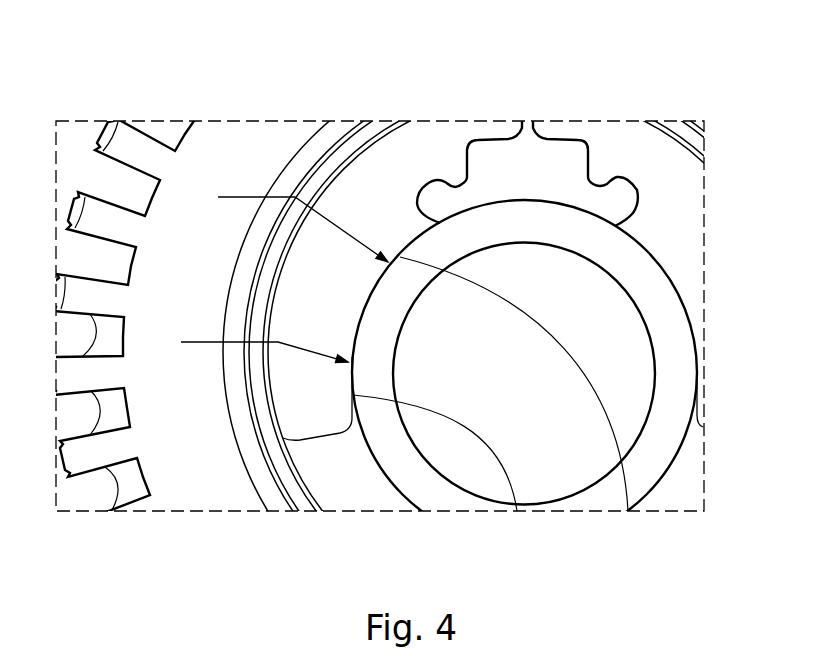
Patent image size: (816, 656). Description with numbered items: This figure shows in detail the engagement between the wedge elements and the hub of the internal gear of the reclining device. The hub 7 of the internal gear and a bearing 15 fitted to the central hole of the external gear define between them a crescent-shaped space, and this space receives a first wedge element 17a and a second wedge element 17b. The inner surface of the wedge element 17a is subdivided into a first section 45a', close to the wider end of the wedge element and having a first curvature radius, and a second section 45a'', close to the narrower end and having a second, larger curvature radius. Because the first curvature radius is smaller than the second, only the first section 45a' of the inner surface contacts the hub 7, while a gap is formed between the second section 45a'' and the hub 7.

The bearing 15 is at (347, 143).
The first wedge element 17a is at (430, 160).
The second wedge element 17b is at (622, 160).
The hub 7 is at (532, 245).
The first section of the inner surface 45a' is at (529, 418).
The second section of the inner surface 45a'' is at (452, 487).